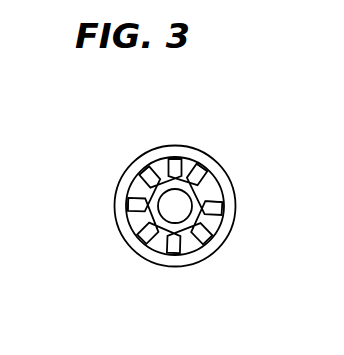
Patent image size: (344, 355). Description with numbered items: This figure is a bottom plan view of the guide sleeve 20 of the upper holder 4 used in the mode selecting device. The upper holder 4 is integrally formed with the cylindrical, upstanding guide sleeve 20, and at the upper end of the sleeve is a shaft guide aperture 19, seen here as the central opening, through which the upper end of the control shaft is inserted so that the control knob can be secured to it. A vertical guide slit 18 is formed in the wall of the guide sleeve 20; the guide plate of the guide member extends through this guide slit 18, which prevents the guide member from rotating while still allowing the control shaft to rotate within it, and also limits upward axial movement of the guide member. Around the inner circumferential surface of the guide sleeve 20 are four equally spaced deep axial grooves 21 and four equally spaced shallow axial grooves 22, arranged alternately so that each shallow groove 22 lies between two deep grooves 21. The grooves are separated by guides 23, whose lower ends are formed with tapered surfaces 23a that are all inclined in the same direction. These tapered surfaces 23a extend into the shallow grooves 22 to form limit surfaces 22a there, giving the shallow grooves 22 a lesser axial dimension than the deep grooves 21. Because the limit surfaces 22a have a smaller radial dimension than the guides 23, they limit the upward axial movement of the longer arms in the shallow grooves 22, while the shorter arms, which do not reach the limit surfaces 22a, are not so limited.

The upper holder 4 is at (232, 228).
The guide slit 18 is at (140, 207).
The shaft guide aperture 19 is at (172, 222).
The guide sleeve 20 is at (203, 258).
The deep axial grooves 21 is at (175, 158).
The shallow axial grooves 22 is at (141, 172).
The limit surfaces 22a is at (130, 188).
The guides 23 is at (216, 192).
The tapered surfaces 23a is at (190, 172).